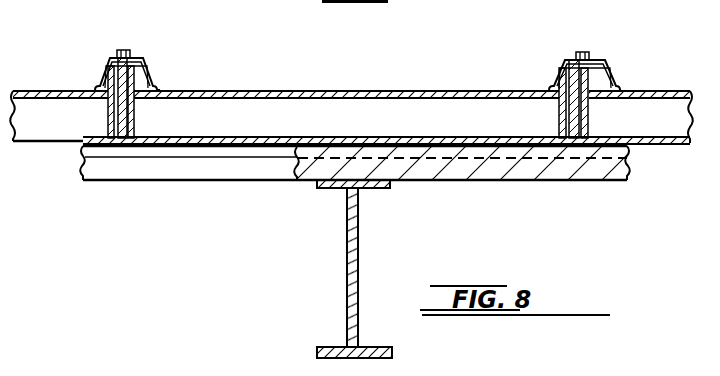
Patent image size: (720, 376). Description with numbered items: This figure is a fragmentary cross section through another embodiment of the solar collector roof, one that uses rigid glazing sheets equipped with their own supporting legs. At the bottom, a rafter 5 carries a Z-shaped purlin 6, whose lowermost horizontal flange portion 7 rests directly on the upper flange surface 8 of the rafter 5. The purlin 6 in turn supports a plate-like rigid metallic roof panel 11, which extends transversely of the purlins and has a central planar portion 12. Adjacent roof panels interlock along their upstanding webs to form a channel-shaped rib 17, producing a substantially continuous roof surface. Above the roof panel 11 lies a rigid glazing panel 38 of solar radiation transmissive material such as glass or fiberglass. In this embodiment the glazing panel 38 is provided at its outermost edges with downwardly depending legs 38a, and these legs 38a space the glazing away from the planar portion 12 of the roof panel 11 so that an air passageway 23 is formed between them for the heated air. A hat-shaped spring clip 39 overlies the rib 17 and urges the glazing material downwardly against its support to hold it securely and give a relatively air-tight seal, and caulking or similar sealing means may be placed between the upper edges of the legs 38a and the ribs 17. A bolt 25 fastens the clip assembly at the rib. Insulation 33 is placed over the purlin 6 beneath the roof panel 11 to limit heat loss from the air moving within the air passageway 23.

The rafter 5 is at (347, 263).
The Z-shaped purlin 6 is at (157, 174).
The lowermost horizontal flange portion 7 is at (219, 178).
The upper flange surface 8 is at (387, 187).
The roof panel 11 is at (173, 137).
The central planar portion 12 is at (250, 137).
The channel-shaped rib 17 is at (108, 113).
The air passageway 23 is at (364, 130).
The bolt 25 is at (128, 50).
The insulation 33 is at (548, 170).
The rigid glazing panel 38 is at (207, 92).
The downwardly depending leg 38a is at (134, 113).
The hat-shaped spring clip 39 is at (145, 61).